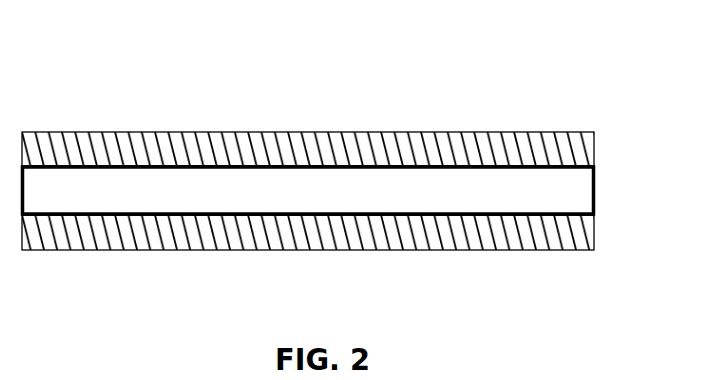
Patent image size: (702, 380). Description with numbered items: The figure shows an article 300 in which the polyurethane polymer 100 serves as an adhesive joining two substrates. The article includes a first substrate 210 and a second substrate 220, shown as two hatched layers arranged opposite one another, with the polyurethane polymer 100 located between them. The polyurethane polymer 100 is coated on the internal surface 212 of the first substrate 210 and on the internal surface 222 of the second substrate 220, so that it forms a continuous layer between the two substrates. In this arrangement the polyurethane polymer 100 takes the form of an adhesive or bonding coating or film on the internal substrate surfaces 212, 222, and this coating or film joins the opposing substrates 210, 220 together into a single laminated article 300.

The article 300 is at (308, 156).
The polyurethane polymer 100 is at (64, 183).
The second substrate 220 is at (268, 132).
The internal surface 222 is at (443, 165).
The first substrate 210 is at (205, 250).
The internal surface 212 is at (442, 217).